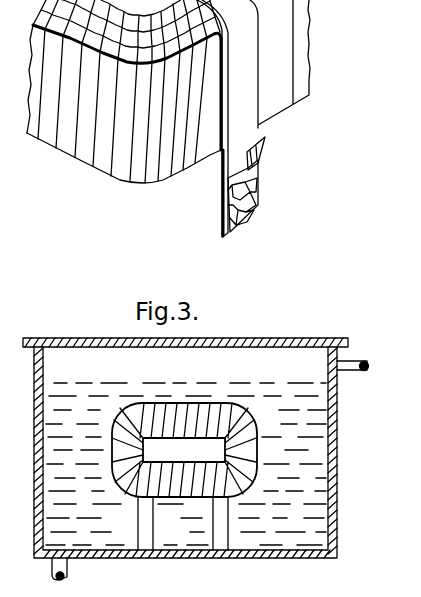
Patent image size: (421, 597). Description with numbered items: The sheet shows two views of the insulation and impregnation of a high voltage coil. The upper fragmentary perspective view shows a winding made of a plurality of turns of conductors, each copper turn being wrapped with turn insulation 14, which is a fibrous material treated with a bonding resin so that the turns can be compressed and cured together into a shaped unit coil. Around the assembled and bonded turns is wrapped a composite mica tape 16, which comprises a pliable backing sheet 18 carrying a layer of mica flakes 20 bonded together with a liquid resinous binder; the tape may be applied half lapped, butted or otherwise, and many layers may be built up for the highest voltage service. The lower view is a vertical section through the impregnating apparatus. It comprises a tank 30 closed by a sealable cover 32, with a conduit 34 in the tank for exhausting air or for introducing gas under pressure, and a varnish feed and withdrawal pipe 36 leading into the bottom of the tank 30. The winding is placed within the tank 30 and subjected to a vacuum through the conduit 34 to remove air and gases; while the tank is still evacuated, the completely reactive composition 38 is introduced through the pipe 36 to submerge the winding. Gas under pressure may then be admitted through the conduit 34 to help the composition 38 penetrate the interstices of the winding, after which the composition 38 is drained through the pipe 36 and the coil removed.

In FIG. 1, the turn insulation 14 is at (68, 148).
In FIG. 1, the composite mica tape 16 is at (248, 127).
In FIG. 1, the pliable backing sheet 18 is at (260, 152).
In FIG. 1, the layer of mica flakes 20 is at (255, 190).
In FIG. 3, the tank 30 is at (317, 557).
In FIG. 3, the sealable cover 32 is at (332, 344).
In FIG. 3, the conduit 34 is at (367, 371).
In FIG. 3, the varnish feed and withdrawal pipe 36 is at (66, 571).
In FIG. 3, the completely reactive composition 38 is at (325, 437).